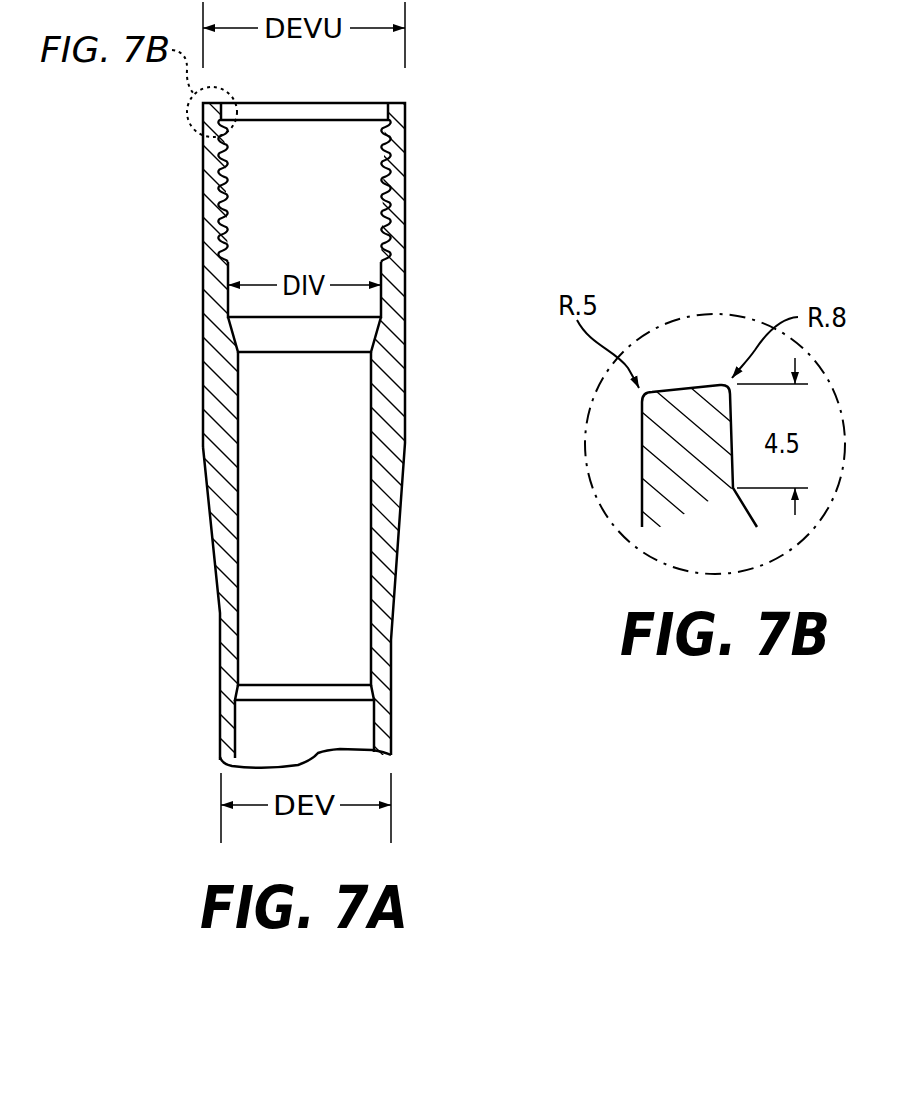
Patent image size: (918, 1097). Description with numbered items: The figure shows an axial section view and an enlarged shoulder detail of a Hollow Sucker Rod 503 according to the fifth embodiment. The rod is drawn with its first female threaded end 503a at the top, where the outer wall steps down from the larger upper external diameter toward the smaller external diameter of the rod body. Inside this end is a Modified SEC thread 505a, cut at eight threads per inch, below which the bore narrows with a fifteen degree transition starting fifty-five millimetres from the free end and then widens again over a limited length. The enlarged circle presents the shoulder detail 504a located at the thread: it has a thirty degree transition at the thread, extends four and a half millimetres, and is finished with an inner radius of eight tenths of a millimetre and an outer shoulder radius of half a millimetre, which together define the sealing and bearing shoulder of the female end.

In FIG. 7A, the Hollow Sucker Rod 503 is at (211, 581).
In FIG. 7A, the first female threaded end 503a is at (408, 168).
In FIG. 7A, the Modified SEC thread 505a is at (222, 192).
In FIG. 7B, the shoulder detail 504a is at (667, 390).